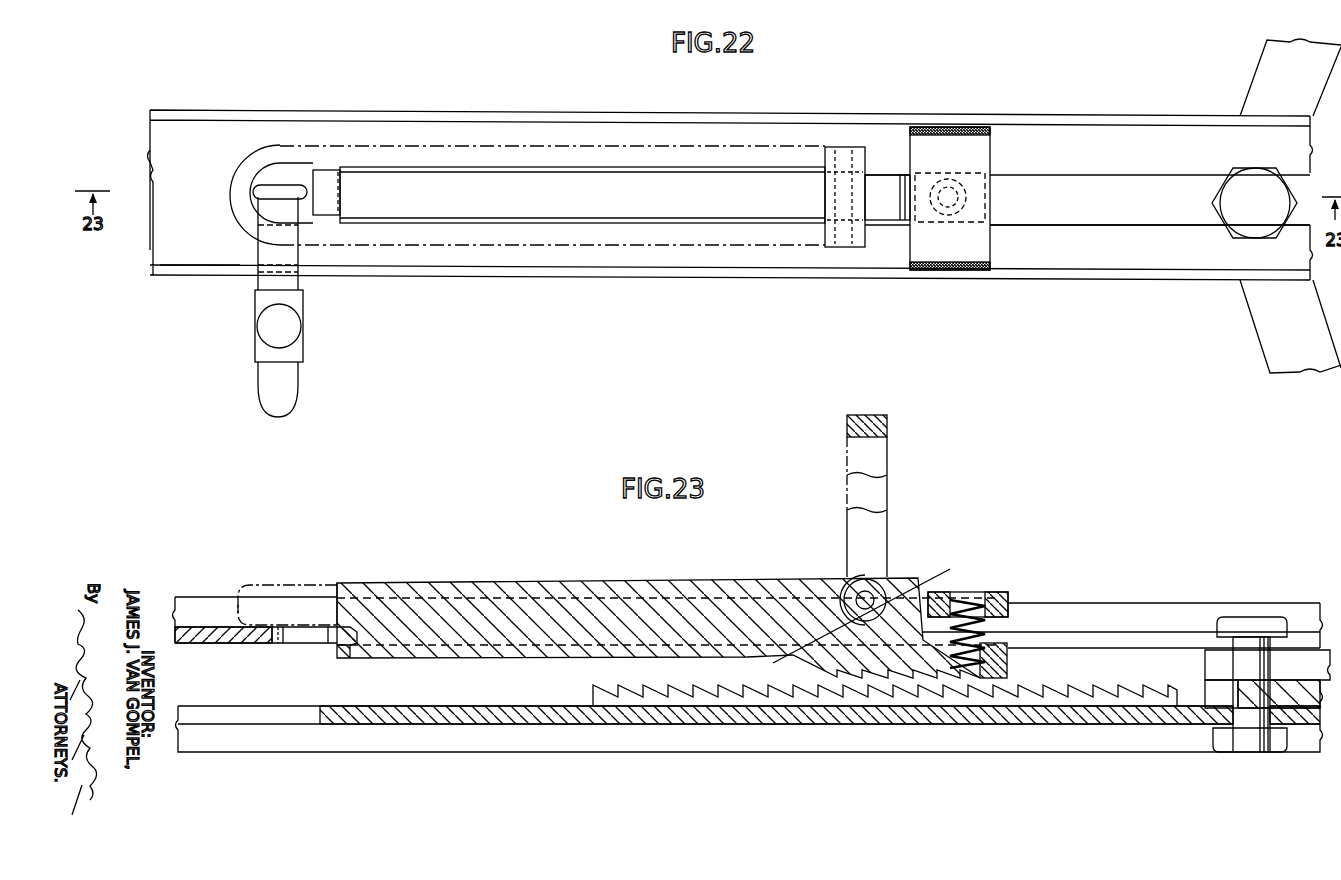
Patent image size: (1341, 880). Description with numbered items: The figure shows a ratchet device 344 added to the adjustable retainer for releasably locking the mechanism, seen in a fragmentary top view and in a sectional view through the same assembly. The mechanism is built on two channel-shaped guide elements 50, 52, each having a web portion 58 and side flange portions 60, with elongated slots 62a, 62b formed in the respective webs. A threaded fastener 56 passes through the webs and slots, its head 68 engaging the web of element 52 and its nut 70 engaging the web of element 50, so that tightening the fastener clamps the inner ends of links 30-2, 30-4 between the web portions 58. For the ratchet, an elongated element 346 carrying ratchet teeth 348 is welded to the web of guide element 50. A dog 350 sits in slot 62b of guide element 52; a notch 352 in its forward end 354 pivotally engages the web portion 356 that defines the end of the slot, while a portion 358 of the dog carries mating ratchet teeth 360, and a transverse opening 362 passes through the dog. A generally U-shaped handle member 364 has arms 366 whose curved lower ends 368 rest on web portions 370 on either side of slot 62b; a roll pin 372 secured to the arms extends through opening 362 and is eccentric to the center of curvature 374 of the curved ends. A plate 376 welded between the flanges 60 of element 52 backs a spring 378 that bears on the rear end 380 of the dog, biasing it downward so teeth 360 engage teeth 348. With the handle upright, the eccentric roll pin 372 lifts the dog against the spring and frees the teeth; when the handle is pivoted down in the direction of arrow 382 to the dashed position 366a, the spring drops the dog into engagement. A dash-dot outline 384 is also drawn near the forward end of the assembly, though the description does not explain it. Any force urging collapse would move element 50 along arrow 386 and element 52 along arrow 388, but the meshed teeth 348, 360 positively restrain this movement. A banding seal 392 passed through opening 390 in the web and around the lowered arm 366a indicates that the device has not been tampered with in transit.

In FIG. 22, the side flange portions 60 is at (234, 108).
In FIG. 23, the side flange portions 60 is at (185, 600).
In FIG. 22, the web portion 58 is at (190, 167).
In FIG. 23, the web portion 58 is at (200, 628).
In FIG. 22, the guide element 52 is at (217, 282).
In FIG. 23, the guide element 52 is at (228, 597).
In FIG. 23, the guide element 50 is at (283, 751).
In FIG. 22, the web portions 370 is at (1066, 147).
In FIG. 23, the web portions 370 is at (1073, 630).
In FIG. 23, the elongated slot 62a is at (292, 713).
In FIG. 22, the elongated slot 62b is at (1140, 224).
In FIG. 23, the elongated slot 62b is at (1101, 640).
In FIG. 22, the link 30-2 is at (1268, 72).
In FIG. 23, the link 30-2 is at (1213, 665).
In FIG. 22, the link 30-4 is at (1268, 340).
In FIG. 23, the link 30-4 is at (1322, 708).
In FIG. 22, the head 68 is at (1246, 202).
In FIG. 23, the head 68 is at (1258, 618).
In FIG. 23, the threaded fastener 56 is at (1248, 722).
In FIG. 23, the nut 70 is at (1222, 742).
In FIG. 22, the ratchet device 344 is at (576, 306).
In FIG. 23, the ratchet device 344 is at (669, 546).
In FIG. 23, the elongated element 346 is at (925, 699).
In FIG. 23, the ratchet teeth 348 is at (800, 695).
In FIG. 22, the dog 350 is at (540, 185).
In FIG. 23, the dog 350 is at (567, 592).
In FIG. 23, the notch 352 is at (352, 652).
In FIG. 22, the forward end 354 is at (326, 170).
In FIG. 23, the forward end 354 is at (340, 590).
In FIG. 23, the web portion 356 is at (352, 632).
In FIG. 23, the portion 358 is at (888, 653).
In FIG. 23, the ratchet teeth 360 is at (985, 680).
In FIG. 22, the transverse opening 362 is at (820, 200).
In FIG. 23, the transverse opening 362 is at (840, 610).
In FIG. 22, the handle member 364 is at (860, 150).
In FIG. 23, the handle member 364 is at (890, 456).
In FIG. 23, the arms 366 is at (878, 530).
In FIG. 22, the arm of handle member in lowered position 366a is at (483, 236).
In FIG. 23, the curved lower ends 368 is at (899, 605).
In FIG. 22, the roll pin 372 is at (846, 237).
In FIG. 23, the roll pin 372 is at (885, 590).
In FIG. 23, the center of curvature 374 is at (755, 667).
In FIG. 22, the plate 376 is at (950, 145).
In FIG. 23, the plate 376 is at (985, 592).
In FIG. 23, the spring 378 is at (1002, 622).
In FIG. 23, the rear end 380 is at (1010, 664).
In FIG. 22, the arrow 382 is at (905, 378).
In FIG. 23, the latch outline 384 is at (265, 585).
In FIG. 23, the arrow 386 is at (1015, 772).
In FIG. 23, the arrow 388 is at (1240, 558).
In FIG. 22, the opening 390 is at (282, 185).
In FIG. 23, the opening 390 is at (300, 640).
In FIG. 22, the banding seal 392 is at (288, 383).